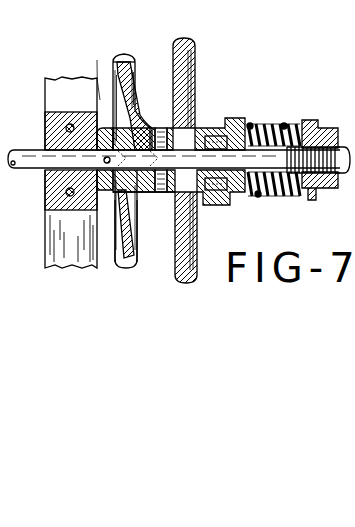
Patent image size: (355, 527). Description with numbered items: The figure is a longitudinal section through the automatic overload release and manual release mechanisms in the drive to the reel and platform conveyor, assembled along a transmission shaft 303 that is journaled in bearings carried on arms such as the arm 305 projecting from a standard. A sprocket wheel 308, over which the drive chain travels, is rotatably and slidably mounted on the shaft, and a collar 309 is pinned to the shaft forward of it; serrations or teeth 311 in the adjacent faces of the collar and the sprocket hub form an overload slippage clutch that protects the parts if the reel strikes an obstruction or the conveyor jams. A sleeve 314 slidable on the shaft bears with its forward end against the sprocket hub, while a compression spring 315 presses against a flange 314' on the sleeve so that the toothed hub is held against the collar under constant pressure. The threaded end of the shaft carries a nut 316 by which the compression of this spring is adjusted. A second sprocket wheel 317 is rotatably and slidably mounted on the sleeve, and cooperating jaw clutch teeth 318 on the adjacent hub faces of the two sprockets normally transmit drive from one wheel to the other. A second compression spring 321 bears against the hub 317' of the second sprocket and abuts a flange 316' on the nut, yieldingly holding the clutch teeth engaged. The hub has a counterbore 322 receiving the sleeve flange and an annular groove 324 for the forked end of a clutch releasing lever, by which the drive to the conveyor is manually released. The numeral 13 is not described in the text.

The lever 13 is at (89, 51).
The transmission shaft 303 is at (39, 154).
The arm 305 is at (47, 114).
The sprocket wheel 308 is at (127, 54).
The collar 309 is at (103, 126).
The serrations or teeth 311 is at (118, 238).
The sleeve 314 is at (179, 155).
The flange 314' is at (253, 116).
The compression spring 315 is at (285, 124).
The nut 316 is at (324, 146).
The flange 316' is at (325, 208).
The second sprocket wheel 317 is at (188, 146).
The hub 317' is at (253, 209).
The serrations or jaw clutch teeth 318 is at (161, 194).
The compression spring 321 is at (268, 124).
The counterbore 322 is at (214, 192).
The annular groove 324 is at (214, 135).